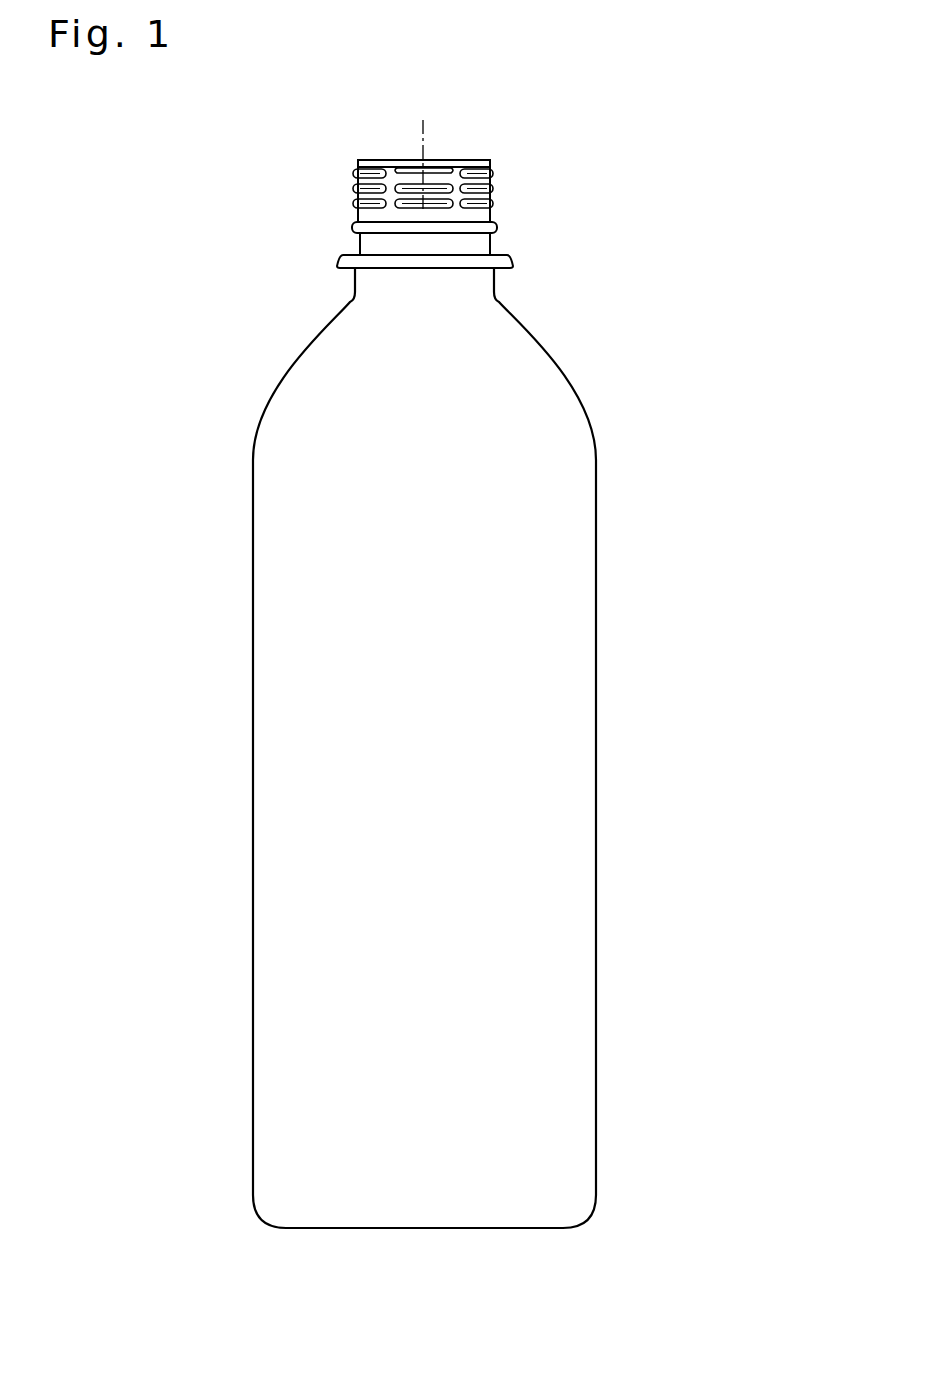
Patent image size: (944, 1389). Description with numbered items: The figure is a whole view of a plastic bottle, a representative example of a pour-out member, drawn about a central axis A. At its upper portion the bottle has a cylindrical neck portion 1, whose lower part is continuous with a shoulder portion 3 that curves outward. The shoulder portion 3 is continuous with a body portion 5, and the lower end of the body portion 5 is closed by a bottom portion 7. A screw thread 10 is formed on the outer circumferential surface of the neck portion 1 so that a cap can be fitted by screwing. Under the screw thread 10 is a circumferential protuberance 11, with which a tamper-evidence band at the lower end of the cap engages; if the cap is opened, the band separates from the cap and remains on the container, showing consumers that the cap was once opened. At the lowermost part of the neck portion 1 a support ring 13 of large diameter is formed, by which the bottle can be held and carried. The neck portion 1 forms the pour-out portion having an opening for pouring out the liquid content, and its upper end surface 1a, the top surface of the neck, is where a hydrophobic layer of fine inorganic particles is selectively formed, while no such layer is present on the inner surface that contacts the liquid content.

The neck portion 1 is at (512, 138).
The upper end surface 1a is at (365, 160).
The shoulder portion 3 is at (568, 378).
The body portion 5 is at (597, 620).
The bottom portion 7 is at (474, 1228).
The screw thread 10 is at (493, 183).
The circumferential protuberance 11 is at (353, 226).
The support ring 13 is at (340, 262).
The central axis A is at (423, 152).